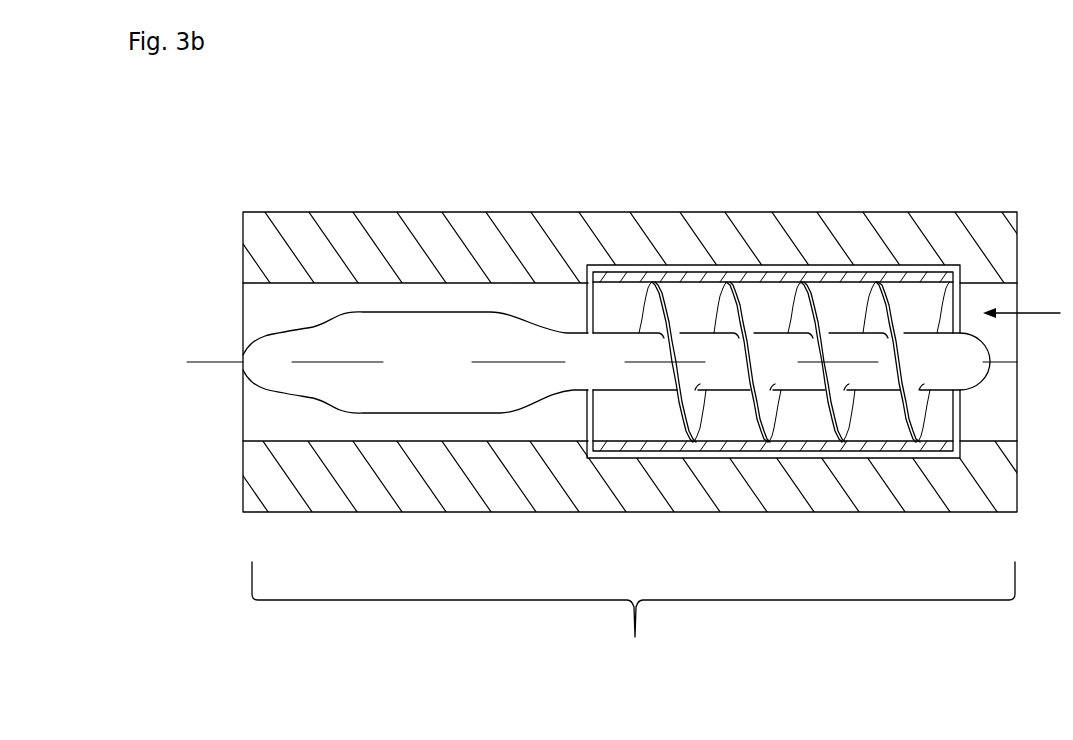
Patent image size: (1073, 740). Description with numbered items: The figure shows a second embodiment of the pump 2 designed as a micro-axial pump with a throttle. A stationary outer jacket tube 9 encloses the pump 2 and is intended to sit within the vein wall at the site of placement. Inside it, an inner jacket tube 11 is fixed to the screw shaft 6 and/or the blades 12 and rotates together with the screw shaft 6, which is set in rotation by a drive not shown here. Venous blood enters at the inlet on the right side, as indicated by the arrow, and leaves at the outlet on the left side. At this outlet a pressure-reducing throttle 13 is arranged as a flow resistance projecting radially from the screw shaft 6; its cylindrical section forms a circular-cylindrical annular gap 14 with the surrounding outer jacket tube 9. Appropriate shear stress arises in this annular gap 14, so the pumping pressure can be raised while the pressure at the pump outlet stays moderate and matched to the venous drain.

The pump 2 is at (633, 629).
The screw shaft 6 is at (917, 348).
The outer jacket tube 9 is at (560, 228).
The inner jacket tube 11 is at (703, 280).
The blades 12 is at (810, 298).
The throttle 13 is at (377, 325).
The annular gap 14 is at (452, 298).